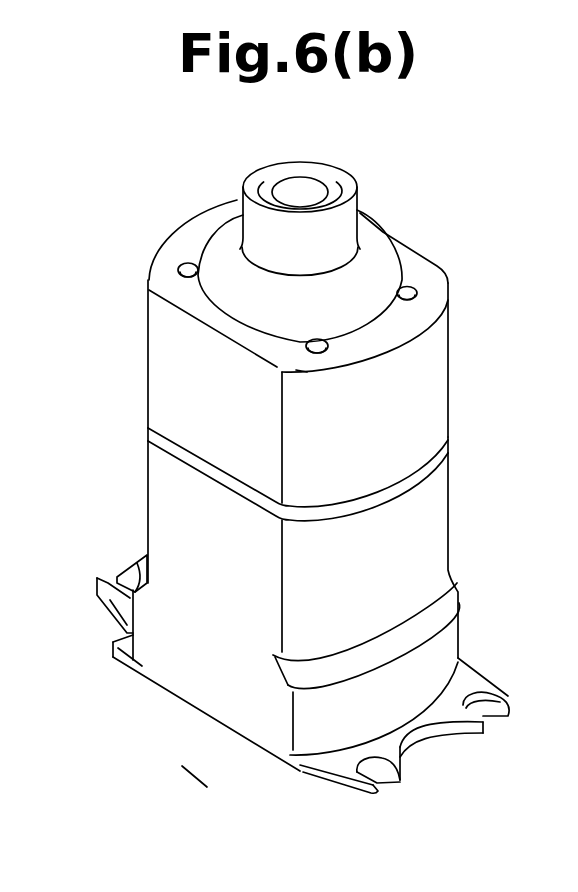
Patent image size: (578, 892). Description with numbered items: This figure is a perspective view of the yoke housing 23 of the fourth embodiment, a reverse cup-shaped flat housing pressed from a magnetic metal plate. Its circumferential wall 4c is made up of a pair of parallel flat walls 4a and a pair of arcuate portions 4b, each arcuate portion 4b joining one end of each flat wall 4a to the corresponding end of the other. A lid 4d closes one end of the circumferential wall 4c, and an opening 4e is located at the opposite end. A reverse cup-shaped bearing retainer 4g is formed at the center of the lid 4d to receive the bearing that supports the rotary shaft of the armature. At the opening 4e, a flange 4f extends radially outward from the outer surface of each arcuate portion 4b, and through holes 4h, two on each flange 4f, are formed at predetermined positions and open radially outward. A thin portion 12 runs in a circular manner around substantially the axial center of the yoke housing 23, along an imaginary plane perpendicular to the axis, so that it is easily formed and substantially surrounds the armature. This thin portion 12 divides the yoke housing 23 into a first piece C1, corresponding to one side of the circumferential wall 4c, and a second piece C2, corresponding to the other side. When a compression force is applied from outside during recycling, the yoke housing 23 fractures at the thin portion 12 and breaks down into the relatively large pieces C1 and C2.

The yoke housing 23 is at (95, 159).
The bearing retainer 4g is at (247, 186).
The lid 4d is at (414, 268).
The second piece C2 is at (175, 405).
The thin portion 12 is at (208, 472).
The first piece C1 is at (416, 538).
The opening 4e is at (187, 707).
The flat wall 4a is at (247, 722).
The arcuate portion 4b is at (320, 738).
The circumferential wall 4c is at (247, 803).
The flange 4f is at (122, 612).
The through hole 4h is at (92, 580).